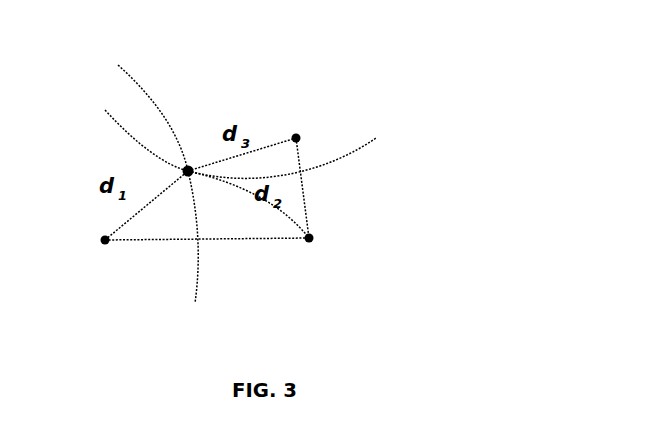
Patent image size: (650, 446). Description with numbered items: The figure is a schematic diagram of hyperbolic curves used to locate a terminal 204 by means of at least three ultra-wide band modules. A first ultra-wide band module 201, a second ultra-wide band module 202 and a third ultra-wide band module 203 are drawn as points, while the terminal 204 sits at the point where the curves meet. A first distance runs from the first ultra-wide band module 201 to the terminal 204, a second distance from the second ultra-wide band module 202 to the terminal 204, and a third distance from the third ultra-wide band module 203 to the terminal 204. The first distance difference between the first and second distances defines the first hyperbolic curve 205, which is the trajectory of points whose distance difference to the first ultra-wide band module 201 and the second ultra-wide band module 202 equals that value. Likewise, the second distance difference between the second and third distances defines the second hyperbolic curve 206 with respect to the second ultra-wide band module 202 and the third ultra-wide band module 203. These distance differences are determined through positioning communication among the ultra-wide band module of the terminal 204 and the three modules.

The first ultra-wide band module 201 is at (108, 245).
The second ultra-wide band module 202 is at (313, 242).
The third ultra-wide band module 203 is at (299, 134).
The terminal 204 is at (190, 168).
The first hyperbolic curve 205 is at (166, 120).
The second hyperbolic curve 206 is at (346, 160).